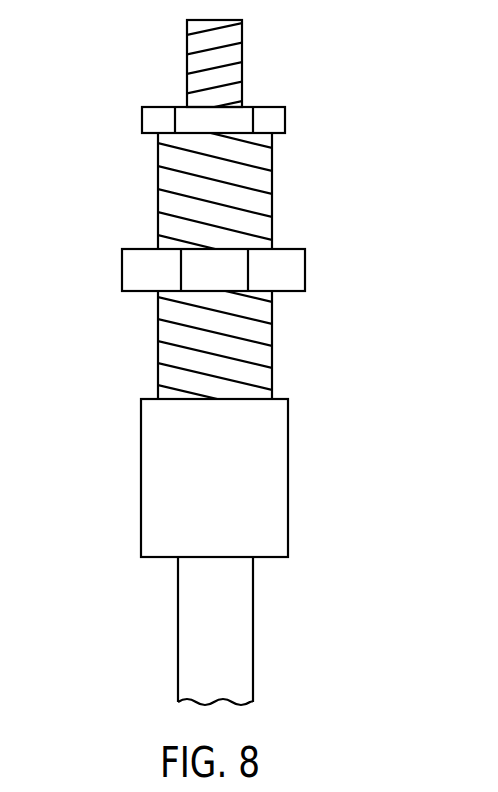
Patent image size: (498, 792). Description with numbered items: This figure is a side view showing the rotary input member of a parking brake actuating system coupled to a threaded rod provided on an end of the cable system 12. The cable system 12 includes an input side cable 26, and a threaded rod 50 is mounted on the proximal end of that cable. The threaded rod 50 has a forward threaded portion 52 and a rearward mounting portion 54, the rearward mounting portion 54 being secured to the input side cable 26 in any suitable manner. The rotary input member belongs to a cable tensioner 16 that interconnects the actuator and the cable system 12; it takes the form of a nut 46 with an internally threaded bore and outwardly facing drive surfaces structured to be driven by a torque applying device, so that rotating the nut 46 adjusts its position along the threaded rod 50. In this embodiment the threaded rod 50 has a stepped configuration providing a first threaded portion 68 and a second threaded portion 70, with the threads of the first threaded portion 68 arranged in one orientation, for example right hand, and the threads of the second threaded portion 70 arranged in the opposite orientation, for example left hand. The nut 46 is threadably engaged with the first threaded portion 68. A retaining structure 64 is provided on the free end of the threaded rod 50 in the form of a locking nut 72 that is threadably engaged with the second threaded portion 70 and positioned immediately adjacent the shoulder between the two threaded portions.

The cable system 12 is at (265, 631).
The cable tensioner 16 is at (204, 260).
The input side cable 26 is at (240, 647).
The nut 46 is at (307, 272).
The threaded rod 50 is at (263, 266).
The forward threaded portion 52 is at (241, 266).
The rearward mounting portion 54 is at (290, 470).
The retaining structure 64 is at (233, 74).
The first threaded portion 68 is at (157, 363).
The second threaded portion 70 is at (242, 60).
The locking nut 72 is at (287, 113).